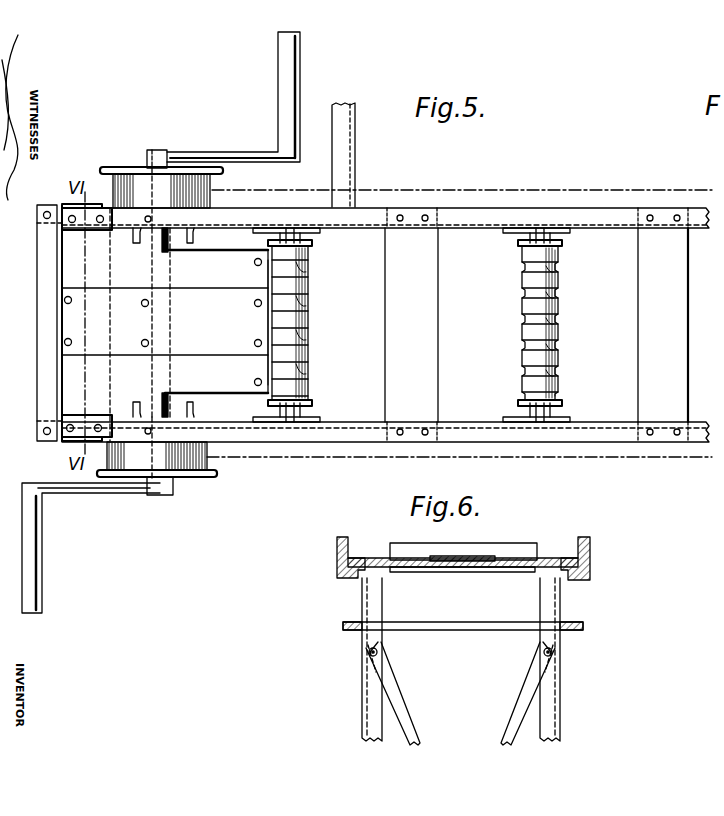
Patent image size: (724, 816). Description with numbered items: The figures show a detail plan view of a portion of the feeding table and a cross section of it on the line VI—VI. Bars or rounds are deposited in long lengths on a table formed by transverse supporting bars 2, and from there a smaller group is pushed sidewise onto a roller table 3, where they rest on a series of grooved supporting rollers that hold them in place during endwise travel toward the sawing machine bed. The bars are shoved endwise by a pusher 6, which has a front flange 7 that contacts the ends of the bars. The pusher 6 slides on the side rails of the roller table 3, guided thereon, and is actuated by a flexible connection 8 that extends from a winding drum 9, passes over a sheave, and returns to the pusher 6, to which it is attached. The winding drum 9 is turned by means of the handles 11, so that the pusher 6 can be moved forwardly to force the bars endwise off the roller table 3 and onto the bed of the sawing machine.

In FIG. 5, the transverse supporting bars 2 is at (347, 133).
In FIG. 5, the roller table 3 is at (546, 325).
In FIG. 6, the roller table 3 is at (463, 551).
In FIG. 5, the pusher 6 is at (165, 322).
In FIG. 6, the pusher 6 is at (476, 568).
In FIG. 5, the front flange 7 is at (268, 365).
In FIG. 6, the front flange 7 is at (490, 548).
In FIG. 5, the flexible connection 8 is at (468, 190).
In FIG. 5, the winding drum 9 is at (192, 483).
In FIG. 5, the handles 11 is at (282, 100).